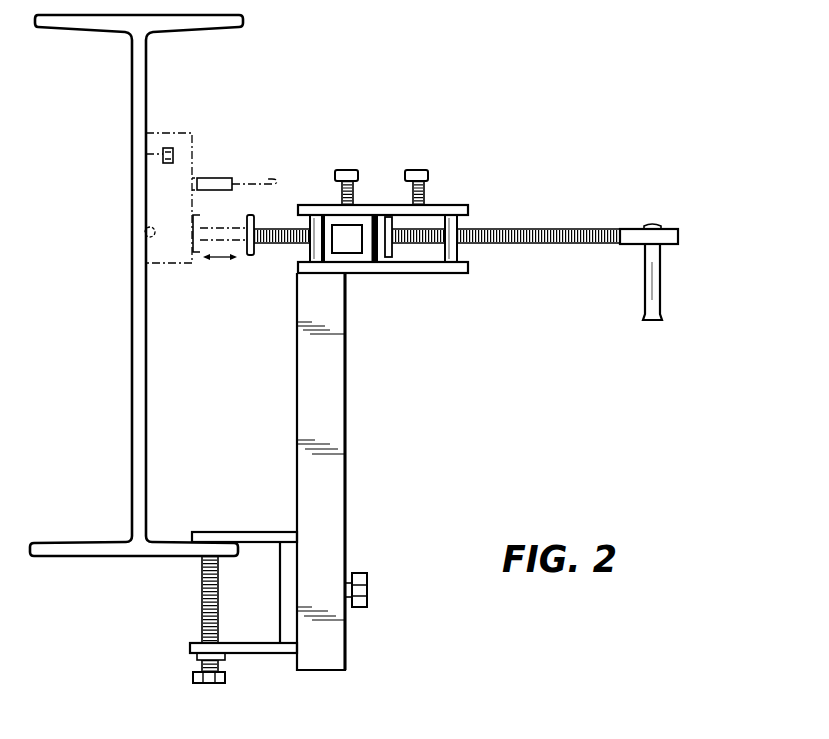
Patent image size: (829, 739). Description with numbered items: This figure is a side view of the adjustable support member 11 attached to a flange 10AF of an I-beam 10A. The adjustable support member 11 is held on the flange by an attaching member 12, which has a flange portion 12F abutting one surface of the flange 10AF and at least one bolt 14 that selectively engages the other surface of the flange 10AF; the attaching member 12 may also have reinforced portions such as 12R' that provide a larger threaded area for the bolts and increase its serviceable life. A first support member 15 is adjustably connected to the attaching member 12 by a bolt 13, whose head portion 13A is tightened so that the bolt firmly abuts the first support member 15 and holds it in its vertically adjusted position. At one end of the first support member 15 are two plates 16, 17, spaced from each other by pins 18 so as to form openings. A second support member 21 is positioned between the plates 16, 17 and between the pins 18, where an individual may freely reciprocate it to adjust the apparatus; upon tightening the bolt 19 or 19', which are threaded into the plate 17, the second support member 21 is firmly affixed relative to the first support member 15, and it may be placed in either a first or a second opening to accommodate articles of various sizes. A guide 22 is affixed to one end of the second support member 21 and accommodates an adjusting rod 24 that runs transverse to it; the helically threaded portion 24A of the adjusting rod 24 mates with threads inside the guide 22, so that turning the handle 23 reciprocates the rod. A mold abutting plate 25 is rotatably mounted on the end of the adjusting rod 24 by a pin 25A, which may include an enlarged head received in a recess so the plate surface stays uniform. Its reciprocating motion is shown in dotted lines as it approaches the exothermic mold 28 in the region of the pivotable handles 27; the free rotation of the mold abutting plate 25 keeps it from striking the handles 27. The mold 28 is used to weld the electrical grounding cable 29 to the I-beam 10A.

The I-beam 10A is at (156, 79).
The flange 10AF is at (173, 548).
The adjustable support member 11 is at (404, 322).
The attaching member 12 is at (261, 666).
The flange portion 12F is at (197, 531).
The reinforced portion 12R' is at (210, 616).
The bolt 13 is at (376, 577).
The head portion 13A is at (368, 596).
The bolt 14 is at (198, 685).
The first support member 15 is at (330, 367).
The plate 16 is at (358, 275).
The plate 17 is at (359, 211).
The pins 18 is at (313, 250).
The bolt 19 is at (348, 165).
The bolt 19' is at (407, 166).
The second support member 21 is at (367, 228).
The guide 22 is at (393, 228).
The handle 23 is at (661, 285).
The adjusting rod 24 is at (626, 221).
The helically threaded portion 24A is at (517, 230).
The mold abutting plate 25 is at (250, 256).
The pin 25A is at (256, 203).
The handle portion 27 is at (224, 178).
The exothermic mold 28 is at (182, 165).
The electrical grounding cable 29 is at (138, 238).